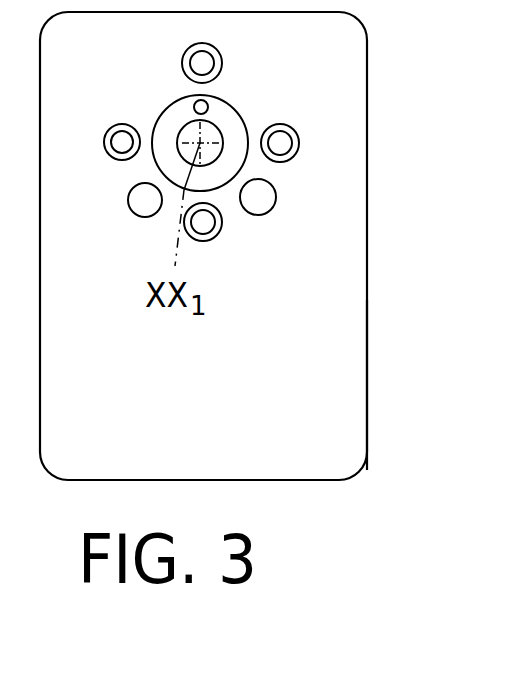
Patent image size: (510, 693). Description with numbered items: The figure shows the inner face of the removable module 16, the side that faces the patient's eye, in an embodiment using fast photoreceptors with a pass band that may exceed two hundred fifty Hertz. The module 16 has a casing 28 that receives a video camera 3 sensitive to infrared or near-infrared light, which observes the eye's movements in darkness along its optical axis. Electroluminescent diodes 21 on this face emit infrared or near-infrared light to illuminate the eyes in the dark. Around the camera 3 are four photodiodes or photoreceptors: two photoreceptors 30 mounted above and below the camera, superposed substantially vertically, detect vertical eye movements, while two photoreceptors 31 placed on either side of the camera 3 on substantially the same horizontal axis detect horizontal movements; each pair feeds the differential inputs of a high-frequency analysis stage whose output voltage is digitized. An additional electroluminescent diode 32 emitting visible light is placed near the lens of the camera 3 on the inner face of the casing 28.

The video camera 3 is at (243, 110).
The removable module 16 is at (229, 380).
The electroluminescent diodes 21 is at (142, 207).
The casing 28 is at (367, 414).
The photoreceptors 30 is at (205, 65).
The photoreceptors 31 is at (119, 143).
The electroluminescent diode 32 is at (196, 107).